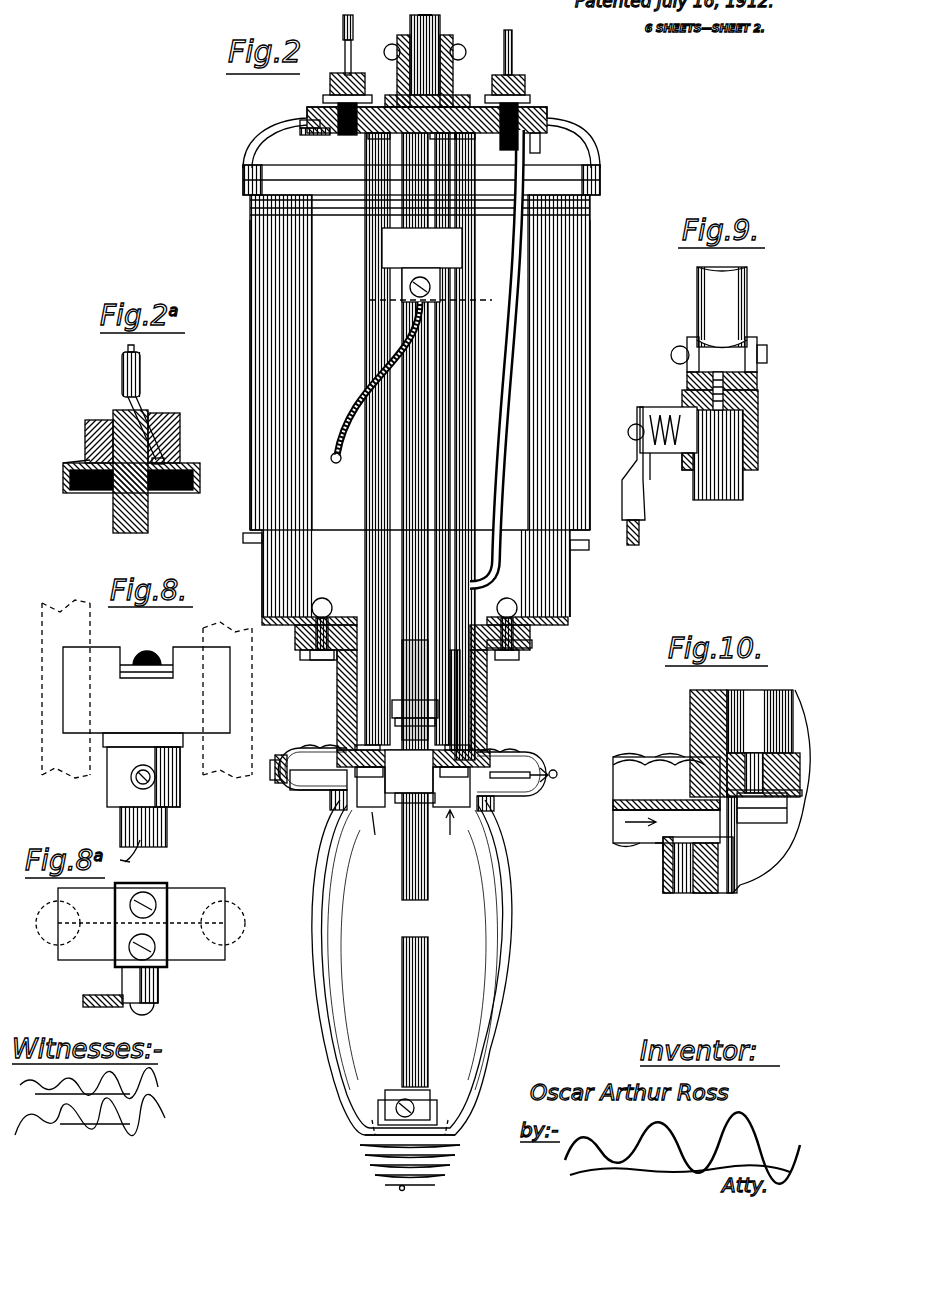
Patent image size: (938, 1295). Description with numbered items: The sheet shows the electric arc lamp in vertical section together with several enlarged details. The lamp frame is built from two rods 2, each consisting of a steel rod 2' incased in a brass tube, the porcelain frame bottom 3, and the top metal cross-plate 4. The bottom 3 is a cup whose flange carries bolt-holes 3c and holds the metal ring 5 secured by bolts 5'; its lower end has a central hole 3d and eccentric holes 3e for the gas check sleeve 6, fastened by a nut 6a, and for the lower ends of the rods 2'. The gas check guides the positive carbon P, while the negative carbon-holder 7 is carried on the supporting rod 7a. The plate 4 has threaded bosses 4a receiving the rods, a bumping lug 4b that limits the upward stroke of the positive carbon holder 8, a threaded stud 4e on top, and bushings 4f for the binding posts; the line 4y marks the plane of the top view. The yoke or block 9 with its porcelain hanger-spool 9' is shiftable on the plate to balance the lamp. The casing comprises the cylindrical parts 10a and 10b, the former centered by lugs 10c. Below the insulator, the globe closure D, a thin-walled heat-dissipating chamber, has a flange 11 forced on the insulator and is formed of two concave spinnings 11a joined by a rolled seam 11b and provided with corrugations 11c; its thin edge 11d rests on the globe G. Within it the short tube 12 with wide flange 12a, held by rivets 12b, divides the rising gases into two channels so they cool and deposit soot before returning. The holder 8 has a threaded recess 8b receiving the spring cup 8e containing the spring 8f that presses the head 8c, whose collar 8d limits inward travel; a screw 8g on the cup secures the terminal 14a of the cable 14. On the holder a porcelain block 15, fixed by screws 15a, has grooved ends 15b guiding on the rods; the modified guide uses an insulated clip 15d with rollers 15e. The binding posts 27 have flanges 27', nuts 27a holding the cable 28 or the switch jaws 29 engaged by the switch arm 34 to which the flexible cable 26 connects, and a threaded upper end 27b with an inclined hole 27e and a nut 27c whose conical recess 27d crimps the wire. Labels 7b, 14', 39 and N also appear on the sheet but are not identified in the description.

In FIG. 2, the rods 2 is at (425, 446).
In FIG. 9, the rods 2 is at (729, 307).
In FIG. 8, the rods 2 is at (140, 689).
In FIG. 10, the rods 2 is at (760, 741).
In FIG. 2, the steel rods 2' is at (444, 700).
In FIG. 2, the frame bottom of insulating material 3 is at (487, 672).
In FIG. 10, the frame bottom of insulating material 3 is at (695, 713).
In FIG. 2, the bolt-holes 3c is at (300, 652).
In FIG. 2, the central hole 3d is at (480, 752).
In FIG. 2, the eccentric holes 3e is at (345, 750).
In FIG. 2, the top metal cross-plate 4 is at (335, 108).
In FIG. 2, the threaded bosses 4a is at (421, 137).
In FIG. 2, the bumping lug 4b is at (442, 148).
In FIG. 2, the threaded lug 4e is at (462, 80).
In FIG. 2, the holes and bosses for binding posts 4f is at (323, 99).
In FIG. 2, the section line 4y is at (315, 45).
In FIG. 2, the metal plate or ring 5 is at (509, 615).
In FIG. 2, the bolts 5' is at (431, 637).
In FIG. 2, the gas check sleeve 6 is at (409, 771).
In FIG. 2, the nut 6a is at (425, 735).
In FIG. 2, the negative carbon holder 7 is at (420, 1097).
In FIG. 2, the supporting rod 7a is at (360, 825).
In FIG. 2, the bushing 7b is at (382, 795).
In FIG. 2, the positive carbon holder 8 is at (430, 280).
In FIG. 9, the positive carbon holder 8 is at (758, 420).
In FIG. 8, the positive carbon holder 8 is at (108, 778).
In FIG. 9, the threaded recess 8b is at (687, 395).
In FIG. 9, the spring-pressed head 8c is at (680, 460).
In FIG. 9, the flange or collar 8d is at (660, 412).
In FIG. 8a, the flange or collar 8d is at (160, 985).
In FIG. 9, the spring cup 8e is at (652, 470).
In FIG. 9, the spring 8f is at (630, 436).
In FIG. 9, the screw 8g is at (645, 420).
In FIG. 8a, the screw 8g is at (150, 1012).
In FIG. 2, the yoke or block 9 is at (410, 61).
In FIG. 2, the porcelain hanger-spool 9' is at (407, 20).
In FIG. 2, the cylindrical casing part 10a is at (252, 335).
In FIG. 2, the lower cylindrical casing part 10b is at (262, 573).
In FIG. 2, the lugs 10c is at (248, 186).
In FIG. 2, the flange 11 is at (411, 772).
In FIG. 10, the flange 11 is at (720, 785).
In FIG. 2, the concave stampings 11a is at (540, 756).
In FIG. 10, the concave stampings 11a is at (645, 750).
In FIG. 2, the rolled seam 11b is at (557, 774).
In FIG. 2, the corrugations 11c is at (300, 748).
In FIG. 10, the corrugations 11c is at (668, 752).
In FIG. 10, the thin edge 11d is at (660, 850).
In FIG. 2, the short tube 12 is at (330, 800).
In FIG. 10, the short tube 12 is at (690, 872).
In FIG. 2, the wide flange 12a is at (300, 790).
In FIG. 10, the wide flange 12a is at (648, 800).
In FIG. 2, the lugs or rivets 12b is at (510, 796).
In FIG. 9, the cable 14 is at (647, 529).
In FIG. 8a, the cable 14 is at (148, 854).
In FIG. 2, the flexible conductor 14' is at (375, 382).
In FIG. 9, the terminal 14a is at (637, 462).
In FIG. 8, the block 15 is at (146, 690).
In FIG. 8a, the block 15 is at (141, 924).
In FIG. 8, the screws 15a is at (155, 642).
In FIG. 8a, the screws 15a is at (165, 900).
In FIG. 8a, the grooved ends 15b is at (141, 923).
In FIG. 9, the clip 15d is at (760, 340).
In FIG. 9, the rollers 15e is at (690, 345).
In FIG. 10, the flexible cable 26 is at (768, 791).
In FIG. 2, the binding posts 27 is at (515, 62).
In FIG. 2a, the binding posts 27 is at (146, 471).
In FIG. 2a, the flanges 27' is at (139, 468).
In FIG. 2, the nuts 27a is at (355, 135).
In FIG. 2a, the threaded upper end 27b is at (152, 418).
In FIG. 2a, the nut 27c is at (85, 432).
In FIG. 2a, the conical recess 27d is at (85, 462).
In FIG. 2a, the inclined hole 27e is at (132, 420).
In FIG. 2, the wire or cable 28 is at (508, 268).
In FIG. 2, the switch jaws 29 is at (310, 135).
In FIG. 2, the switch arm 34 is at (300, 125).
In FIG. 10, the nut 39 is at (735, 820).
In FIG. 2, the globe closure D is at (265, 773).
In FIG. 2, the globe G is at (512, 920).
In FIG. 2, the central rod N is at (423, 990).
In FIG. 2, the positive carbon P is at (405, 640).
In FIG. 9, the positive carbon P is at (720, 500).
In FIG. 8, the positive carbon P is at (167, 820).